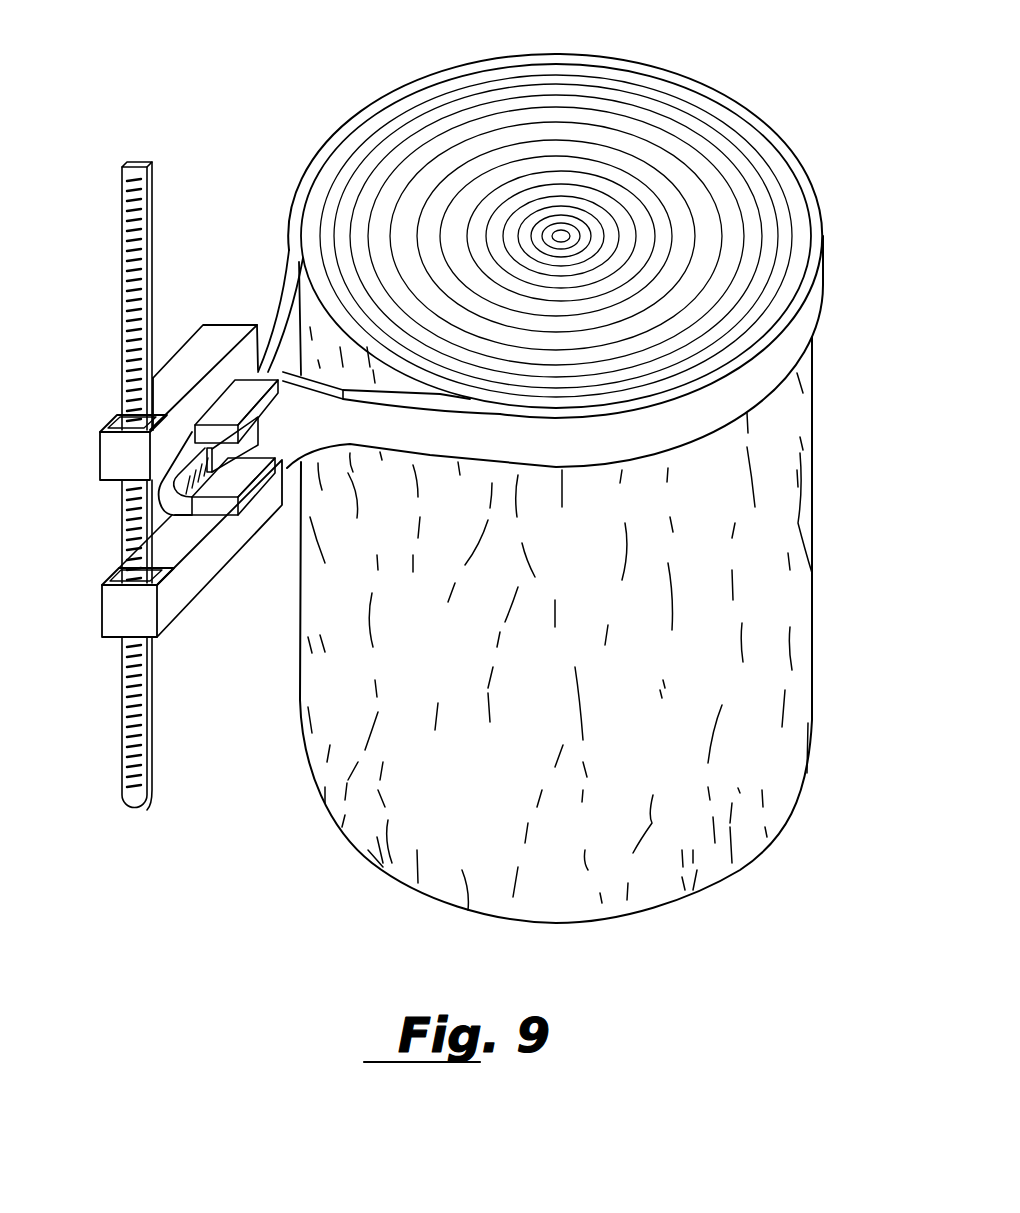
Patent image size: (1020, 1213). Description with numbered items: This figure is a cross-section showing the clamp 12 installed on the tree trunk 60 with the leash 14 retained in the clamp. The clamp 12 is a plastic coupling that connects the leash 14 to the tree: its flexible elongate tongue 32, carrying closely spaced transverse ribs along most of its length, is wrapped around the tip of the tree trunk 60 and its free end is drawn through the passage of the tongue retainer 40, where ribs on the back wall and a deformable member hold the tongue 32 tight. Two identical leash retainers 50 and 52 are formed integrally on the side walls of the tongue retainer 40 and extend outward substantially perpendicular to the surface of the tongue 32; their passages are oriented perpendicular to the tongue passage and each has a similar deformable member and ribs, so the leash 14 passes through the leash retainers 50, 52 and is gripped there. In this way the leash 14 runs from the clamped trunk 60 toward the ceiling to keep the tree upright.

The clamp 12 is at (535, 470).
The leash 14 is at (122, 243).
The tongue 32 is at (772, 385).
The tongue retainer 40 is at (283, 512).
The leash retainer 50 is at (102, 617).
The leash retainer 52 is at (100, 446).
The tree trunk 60 is at (812, 690).